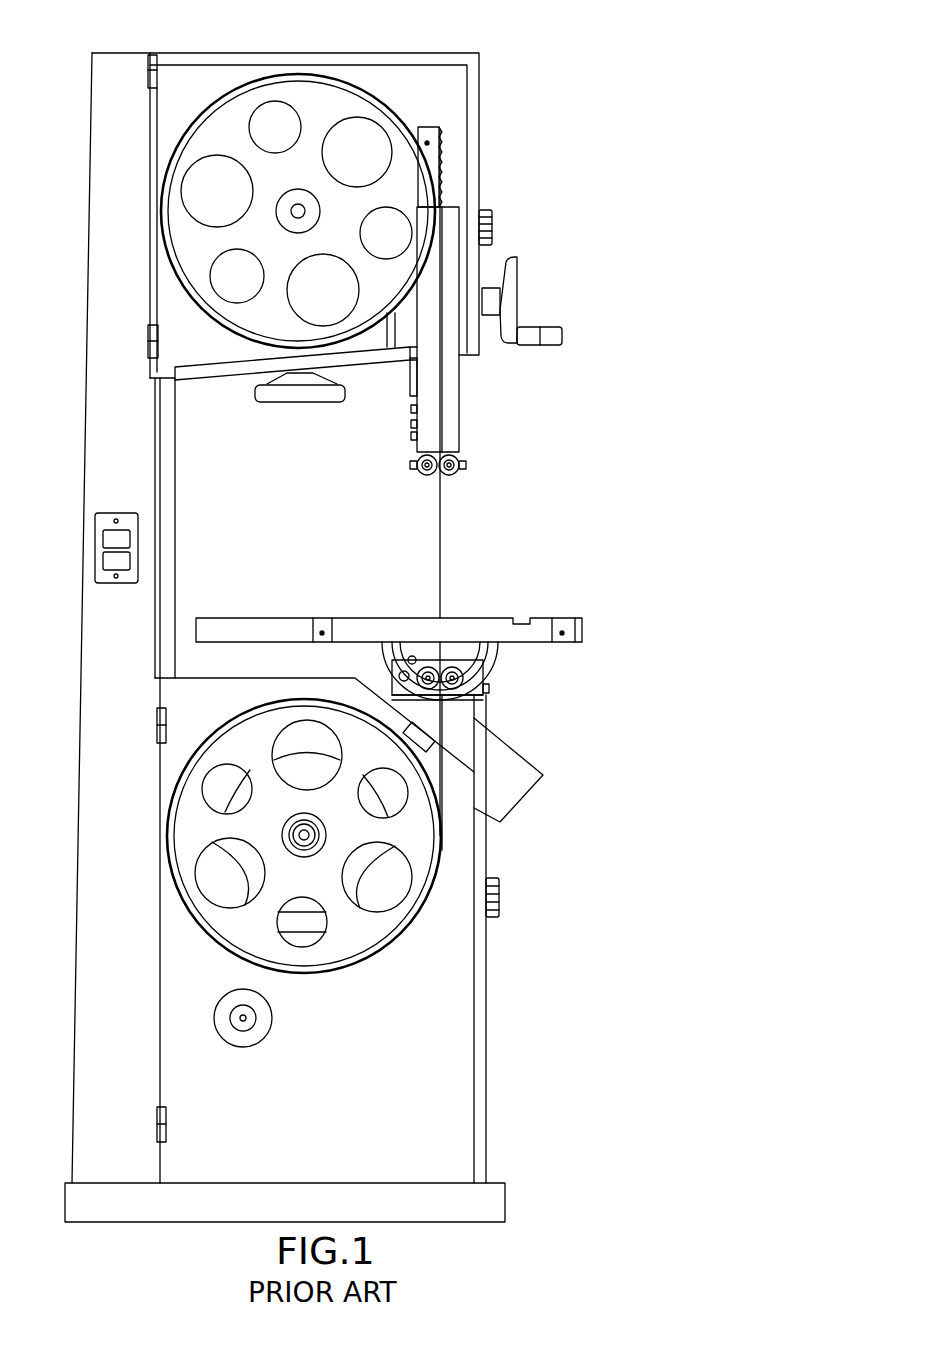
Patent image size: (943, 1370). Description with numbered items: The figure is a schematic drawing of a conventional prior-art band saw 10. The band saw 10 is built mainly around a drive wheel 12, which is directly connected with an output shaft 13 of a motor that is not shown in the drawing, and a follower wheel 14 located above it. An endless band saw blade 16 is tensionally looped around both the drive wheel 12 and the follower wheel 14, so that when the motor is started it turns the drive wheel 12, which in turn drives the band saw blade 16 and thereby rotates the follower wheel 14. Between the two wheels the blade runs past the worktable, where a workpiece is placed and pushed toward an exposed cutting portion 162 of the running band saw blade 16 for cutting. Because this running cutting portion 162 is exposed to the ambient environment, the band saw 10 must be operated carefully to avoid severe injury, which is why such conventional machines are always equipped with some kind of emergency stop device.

The band saw 10 is at (334, 632).
The drive wheel 12 is at (374, 841).
The output shaft 13 is at (312, 848).
The follower wheel 14 is at (410, 185).
The band saw blade 16 is at (150, 268).
The cutting portion 162 is at (445, 558).